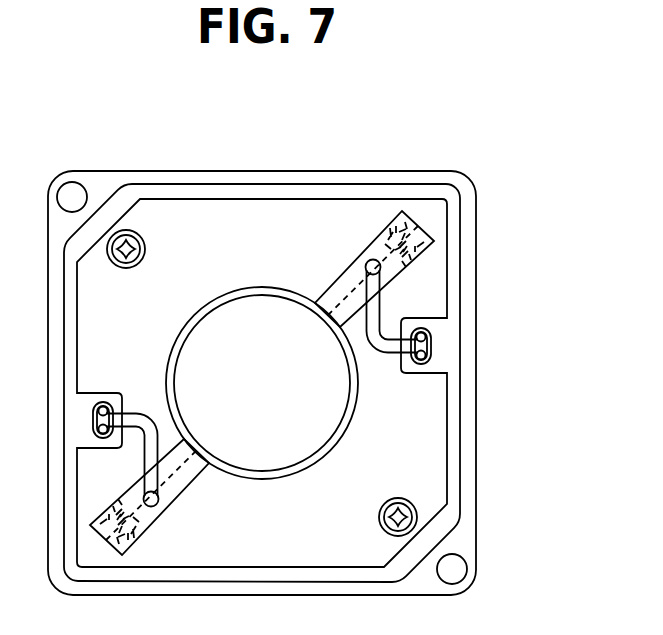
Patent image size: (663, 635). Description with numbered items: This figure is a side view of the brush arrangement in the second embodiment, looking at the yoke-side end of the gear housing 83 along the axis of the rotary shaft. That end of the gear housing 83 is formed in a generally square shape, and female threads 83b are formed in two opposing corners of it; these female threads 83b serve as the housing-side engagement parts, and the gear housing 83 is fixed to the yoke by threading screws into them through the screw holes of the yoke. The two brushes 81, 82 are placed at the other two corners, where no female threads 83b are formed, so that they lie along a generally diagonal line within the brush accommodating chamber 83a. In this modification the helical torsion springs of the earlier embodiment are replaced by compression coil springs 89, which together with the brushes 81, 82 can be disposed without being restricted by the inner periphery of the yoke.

The brush 81 is at (323, 320).
The brush 82 is at (203, 446).
The gear housing 83 is at (477, 242).
The brush accommodating chamber 83a is at (322, 189).
The female threads 83b is at (76, 190).
The compression coil springs 89 is at (130, 544).